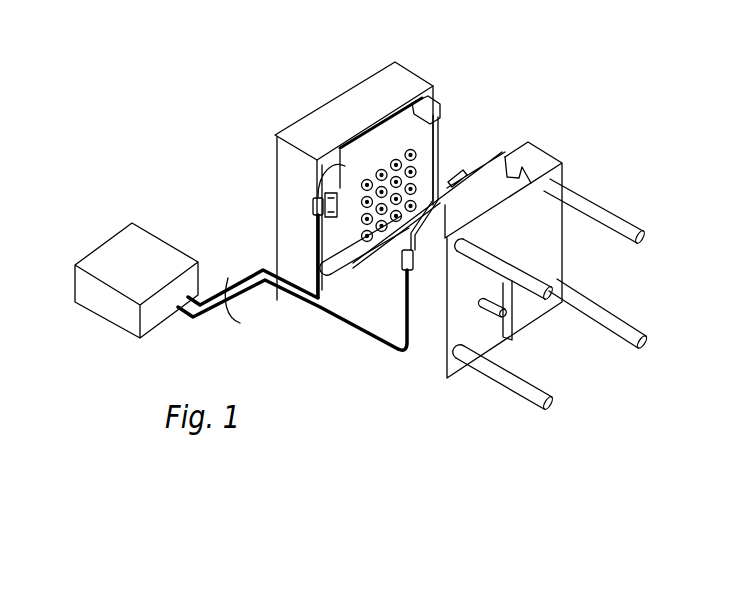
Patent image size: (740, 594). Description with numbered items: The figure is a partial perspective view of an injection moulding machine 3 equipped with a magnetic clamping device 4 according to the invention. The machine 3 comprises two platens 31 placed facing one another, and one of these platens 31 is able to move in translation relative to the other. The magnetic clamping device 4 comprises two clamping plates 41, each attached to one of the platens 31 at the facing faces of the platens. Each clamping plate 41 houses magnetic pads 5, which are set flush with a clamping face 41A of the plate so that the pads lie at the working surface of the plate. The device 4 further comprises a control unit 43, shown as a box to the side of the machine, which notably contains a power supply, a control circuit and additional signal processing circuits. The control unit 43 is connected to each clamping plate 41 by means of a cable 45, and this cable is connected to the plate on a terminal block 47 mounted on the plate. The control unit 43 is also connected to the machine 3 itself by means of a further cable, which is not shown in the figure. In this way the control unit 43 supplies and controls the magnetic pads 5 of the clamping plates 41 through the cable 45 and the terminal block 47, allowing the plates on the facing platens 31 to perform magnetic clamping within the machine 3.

The injection moulding machine 3 is at (337, 84).
The platen 31 is at (393, 72).
The clamping plate 41 is at (317, 197).
The clamping face 41A is at (412, 118).
The magnetic pad 5 is at (424, 156).
The terminal block 47 is at (311, 207).
The magnetic clamping device 4 is at (229, 269).
The cable 45 is at (240, 323).
The control unit 43 is at (107, 260).